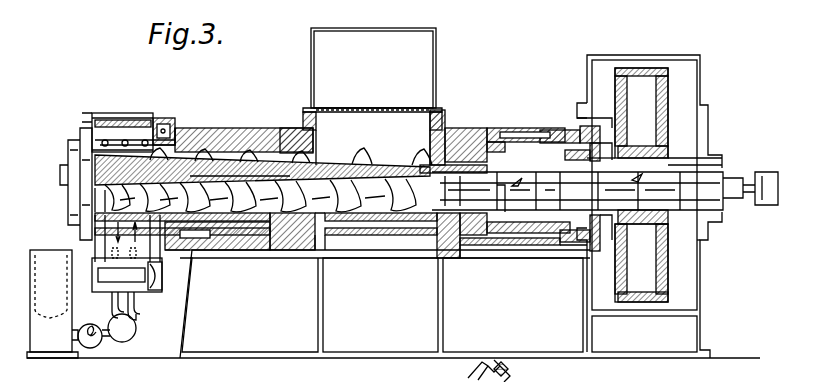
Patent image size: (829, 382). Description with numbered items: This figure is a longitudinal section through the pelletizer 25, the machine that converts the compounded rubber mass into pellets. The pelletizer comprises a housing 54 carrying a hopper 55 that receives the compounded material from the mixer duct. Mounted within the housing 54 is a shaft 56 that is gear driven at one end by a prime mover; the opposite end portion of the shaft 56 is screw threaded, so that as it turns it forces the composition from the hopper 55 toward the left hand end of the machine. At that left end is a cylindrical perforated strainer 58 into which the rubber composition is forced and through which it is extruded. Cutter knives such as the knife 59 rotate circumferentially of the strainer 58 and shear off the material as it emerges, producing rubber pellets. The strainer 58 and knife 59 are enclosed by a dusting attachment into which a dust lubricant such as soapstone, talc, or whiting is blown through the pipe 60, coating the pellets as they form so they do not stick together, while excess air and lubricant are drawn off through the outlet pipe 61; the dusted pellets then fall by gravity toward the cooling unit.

The pelletizer 25 is at (466, 112).
The housing 54 is at (266, 136).
The hopper 55 is at (434, 65).
The shaft 56 is at (540, 183).
The strainer 58 is at (140, 146).
The knife 59 is at (115, 138).
The pipe 60 is at (160, 262).
The outlet pipe 61 is at (90, 250).